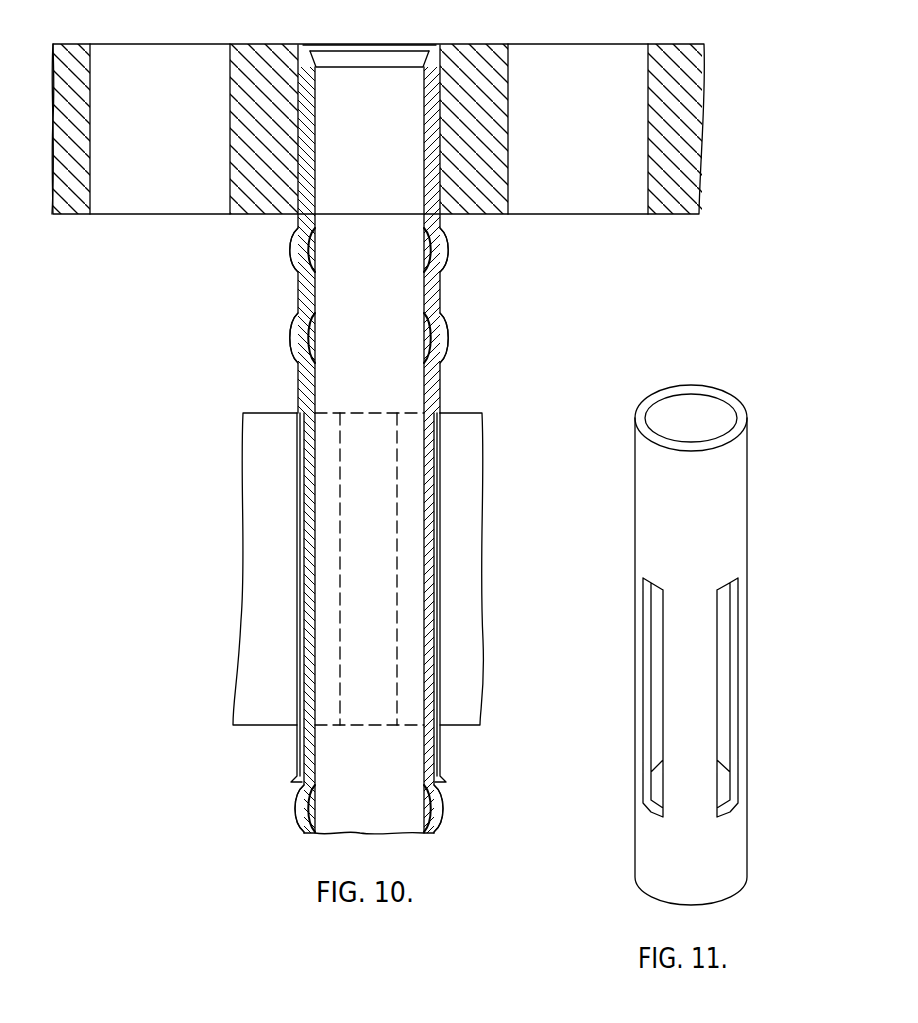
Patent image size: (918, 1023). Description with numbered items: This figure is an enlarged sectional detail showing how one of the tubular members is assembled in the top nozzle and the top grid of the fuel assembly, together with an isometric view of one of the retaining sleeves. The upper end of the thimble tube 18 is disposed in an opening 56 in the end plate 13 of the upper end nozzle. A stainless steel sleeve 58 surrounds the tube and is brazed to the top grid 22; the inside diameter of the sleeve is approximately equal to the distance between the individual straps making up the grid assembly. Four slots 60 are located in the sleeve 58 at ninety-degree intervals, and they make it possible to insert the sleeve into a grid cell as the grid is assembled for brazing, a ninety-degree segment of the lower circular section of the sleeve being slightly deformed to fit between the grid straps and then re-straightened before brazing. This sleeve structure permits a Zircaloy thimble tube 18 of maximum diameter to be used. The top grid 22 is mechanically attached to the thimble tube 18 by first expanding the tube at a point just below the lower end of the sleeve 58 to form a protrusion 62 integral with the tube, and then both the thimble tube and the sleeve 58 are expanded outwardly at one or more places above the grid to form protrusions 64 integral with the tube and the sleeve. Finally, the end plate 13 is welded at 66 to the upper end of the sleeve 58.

In FIG. 10, the end plate 13 is at (53, 156).
In FIG. 10, the opening 56 is at (403, 47).
In FIG. 10, the weld 66 is at (306, 47).
In FIG. 10, the tubular member 18 is at (308, 371).
In FIG. 10, the protrusions 64 is at (290, 330).
In FIG. 10, the top grid 22 is at (243, 537).
In FIG. 10, the retaining sleeve 58 is at (297, 755).
In FIG. 11, the retaining sleeve 58 is at (748, 530).
In FIG. 10, the protrusion 62 is at (297, 803).
In FIG. 11, the slots 60 is at (660, 680).